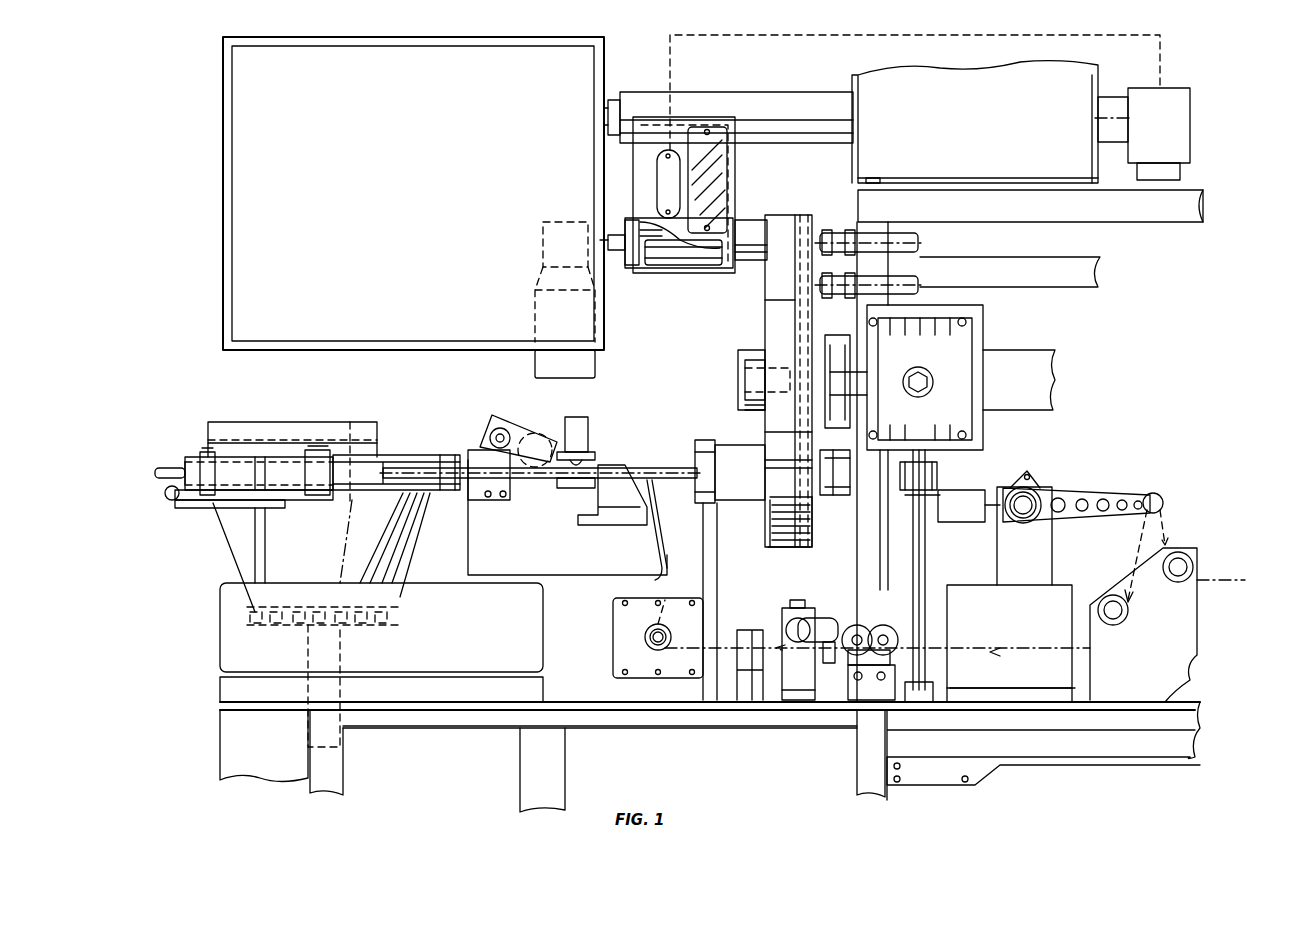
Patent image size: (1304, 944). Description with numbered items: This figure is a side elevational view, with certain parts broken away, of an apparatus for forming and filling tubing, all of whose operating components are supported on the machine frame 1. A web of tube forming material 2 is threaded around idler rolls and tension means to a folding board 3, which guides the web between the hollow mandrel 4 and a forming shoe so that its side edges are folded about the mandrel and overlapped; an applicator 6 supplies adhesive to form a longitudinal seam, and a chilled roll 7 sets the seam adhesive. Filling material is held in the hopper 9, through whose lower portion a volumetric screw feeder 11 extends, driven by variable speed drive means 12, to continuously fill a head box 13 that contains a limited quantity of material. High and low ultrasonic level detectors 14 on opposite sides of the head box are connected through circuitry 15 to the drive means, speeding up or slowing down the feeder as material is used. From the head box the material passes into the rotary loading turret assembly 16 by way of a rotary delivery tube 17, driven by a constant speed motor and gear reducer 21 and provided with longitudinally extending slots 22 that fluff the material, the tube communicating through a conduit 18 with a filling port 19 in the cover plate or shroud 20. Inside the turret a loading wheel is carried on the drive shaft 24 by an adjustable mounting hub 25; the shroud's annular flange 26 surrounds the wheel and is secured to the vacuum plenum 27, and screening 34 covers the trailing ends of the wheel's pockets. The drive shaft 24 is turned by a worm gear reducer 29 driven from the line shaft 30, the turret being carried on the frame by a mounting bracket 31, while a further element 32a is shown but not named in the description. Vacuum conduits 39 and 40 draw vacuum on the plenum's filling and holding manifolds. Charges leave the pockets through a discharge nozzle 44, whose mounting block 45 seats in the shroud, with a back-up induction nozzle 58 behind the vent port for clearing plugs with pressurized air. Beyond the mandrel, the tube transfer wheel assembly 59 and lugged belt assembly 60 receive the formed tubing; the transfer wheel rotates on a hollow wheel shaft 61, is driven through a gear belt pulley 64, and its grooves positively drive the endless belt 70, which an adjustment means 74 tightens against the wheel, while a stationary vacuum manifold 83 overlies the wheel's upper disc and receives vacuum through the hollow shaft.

The machine frame 1 is at (618, 718).
The web of tube forming material 2 is at (662, 595).
The folding board 3 is at (655, 535).
The hollow mandrel 4 is at (520, 490).
The applicator 6 is at (580, 416).
The chilled roll 7 is at (540, 440).
The hopper 9 is at (1100, 78).
The volumetric screw feeder 11 is at (748, 92).
The variable speed drive means 12 is at (1190, 108).
The head box 13 is at (735, 162).
The ultrasonic level detectors 14 is at (657, 172).
The circuitry 15 is at (720, 40).
The rotary loading turret assembly 16 is at (738, 336).
The rotary delivery tube 17 is at (657, 245).
The conduit 18 is at (750, 225).
The filling port 19 is at (790, 215).
The cover plate or shroud 20 is at (765, 300).
The constant speed motor and gear reducer 21 is at (543, 240).
The longitudinally extending slots 22 is at (682, 250).
The drive shaft 24 is at (860, 400).
The adjustable mounting hub 25 is at (740, 372).
The annular flange 26 is at (792, 549).
The vacuum plenum 27 is at (812, 527).
The worm gear reducer 29 is at (953, 348).
The line shaft 30 is at (925, 540).
The mounting bracket 31 is at (843, 430).
The coupling 32a is at (960, 445).
The screening 34 is at (848, 592).
The vacuum conduit 39 is at (920, 243).
The vacuum conduit 40 is at (920, 288).
The discharge nozzle 44 is at (660, 468).
The mounting block 45 is at (745, 503).
The back-up induction nozzle 58 is at (838, 497).
The tube transfer wheel assembly 59 is at (415, 445).
The lugged belt assembly 60 is at (170, 463).
The wheel shaft 61 is at (340, 657).
The gear belt pulley 64 is at (400, 618).
The endless belt 70 is at (243, 457).
The adjustment means 74 is at (165, 495).
The stationary vacuum manifold 83 is at (315, 420).